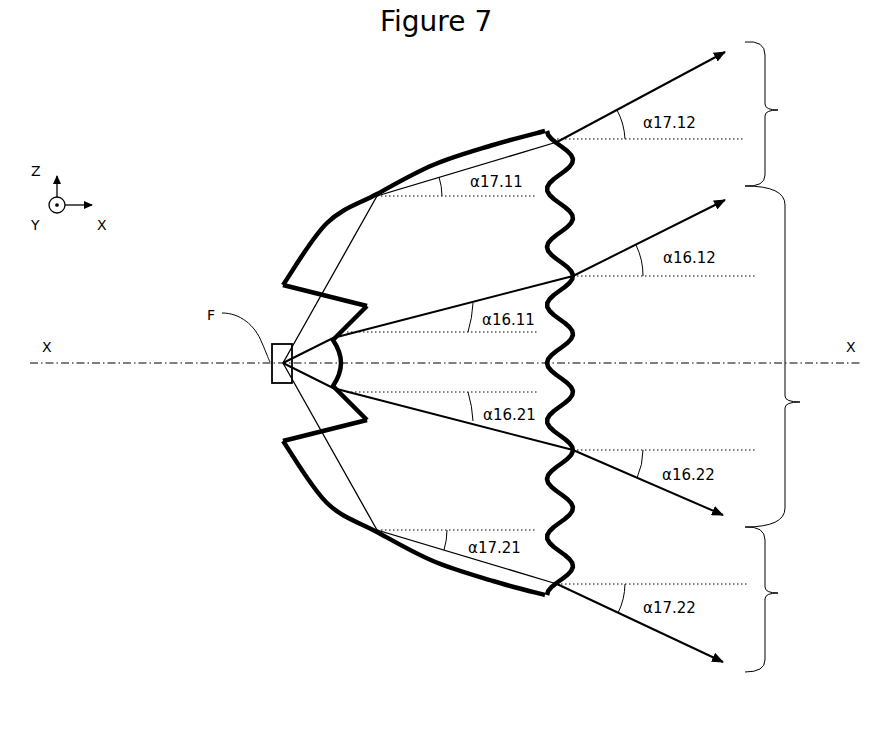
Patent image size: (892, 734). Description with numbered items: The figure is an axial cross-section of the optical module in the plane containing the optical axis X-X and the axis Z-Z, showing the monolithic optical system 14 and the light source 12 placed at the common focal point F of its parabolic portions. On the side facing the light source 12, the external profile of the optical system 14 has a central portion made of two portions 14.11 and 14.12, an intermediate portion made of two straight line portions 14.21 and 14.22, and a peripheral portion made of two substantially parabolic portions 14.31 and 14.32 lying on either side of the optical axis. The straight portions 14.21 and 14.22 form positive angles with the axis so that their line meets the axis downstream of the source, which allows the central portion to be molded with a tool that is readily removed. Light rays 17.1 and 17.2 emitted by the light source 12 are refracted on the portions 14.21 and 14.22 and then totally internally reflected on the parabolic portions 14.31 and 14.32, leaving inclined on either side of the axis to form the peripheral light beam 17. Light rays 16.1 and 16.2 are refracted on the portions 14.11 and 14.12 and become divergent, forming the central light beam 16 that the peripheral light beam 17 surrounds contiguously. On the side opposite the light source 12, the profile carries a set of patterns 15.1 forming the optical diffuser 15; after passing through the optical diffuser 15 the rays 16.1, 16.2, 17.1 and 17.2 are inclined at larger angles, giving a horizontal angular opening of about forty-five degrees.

The light source 12 is at (270, 372).
The optical system 14 is at (458, 346).
The central portion 14.11 is at (370, 313).
The central portion 14.12 is at (357, 407).
The straight line portion 14.21 is at (340, 293).
The straight line portion 14.22 is at (333, 432).
The substantially parabolic surface portion 14.31 is at (427, 167).
The substantially parabolic surface portion 14.32 is at (330, 500).
The optical diffuser 15 is at (524, 363).
The patterns 15.1 is at (570, 314).
The central light beam 16 is at (560, 363).
The light ray 16.1 is at (685, 213).
The light ray 16.2 is at (677, 499).
The peripheral light beam 17 is at (551, 355).
The light ray 17.1 is at (650, 89).
The light ray 17.2 is at (650, 630).